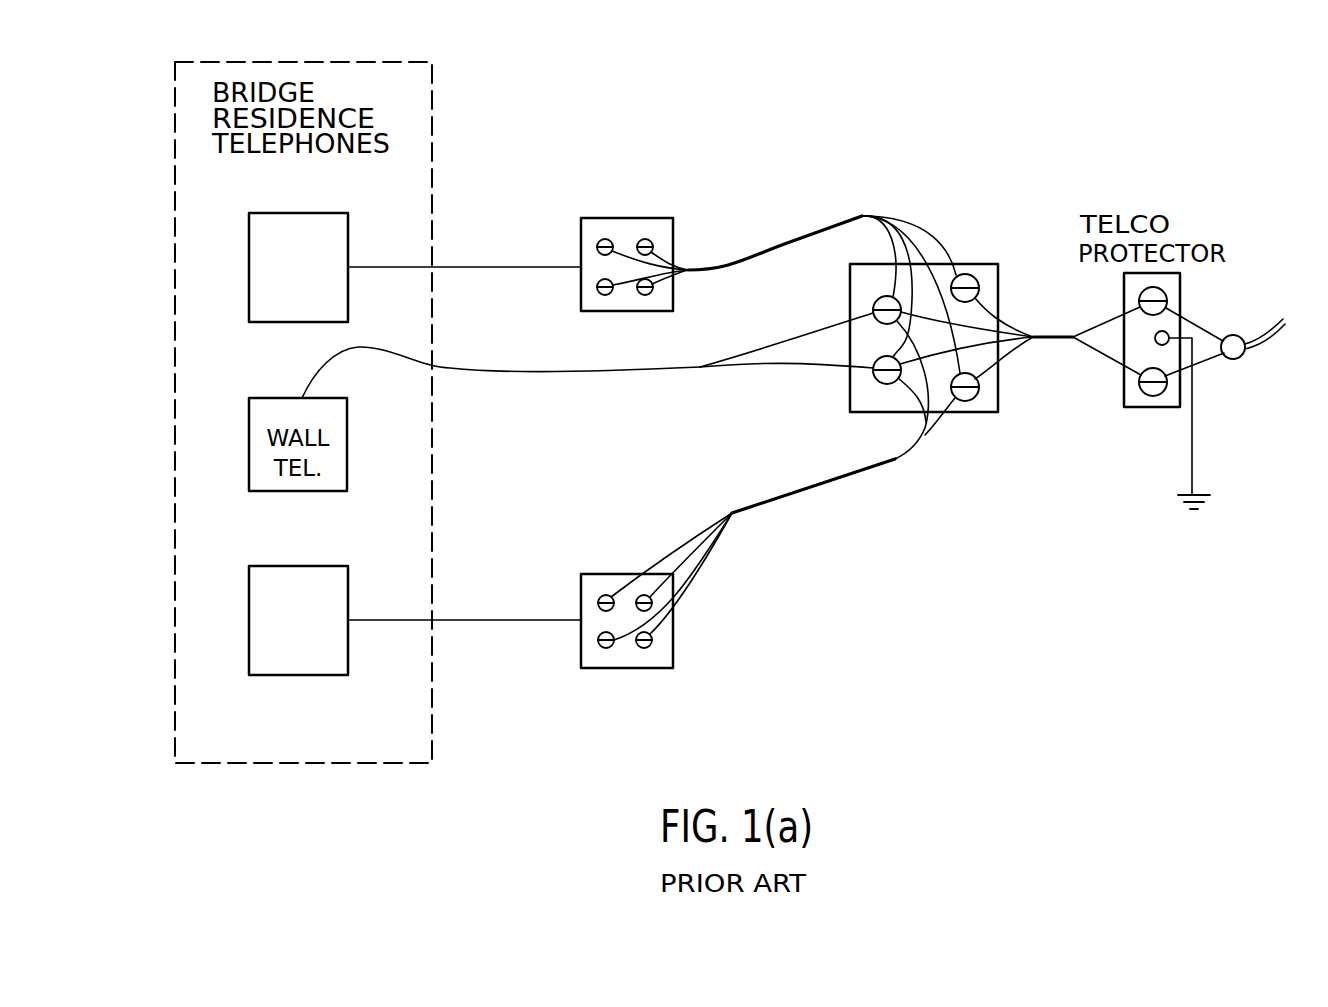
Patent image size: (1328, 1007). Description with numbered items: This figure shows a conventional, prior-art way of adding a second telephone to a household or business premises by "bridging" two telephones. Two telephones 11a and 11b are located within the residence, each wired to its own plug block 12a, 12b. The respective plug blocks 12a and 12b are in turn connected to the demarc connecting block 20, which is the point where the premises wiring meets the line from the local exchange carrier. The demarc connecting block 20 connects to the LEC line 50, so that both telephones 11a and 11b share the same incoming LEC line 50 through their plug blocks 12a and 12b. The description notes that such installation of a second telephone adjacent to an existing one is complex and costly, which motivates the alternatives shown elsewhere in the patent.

The telephone 11a is at (249, 267).
The telephone 11b is at (249, 619).
The plug block 12a is at (628, 218).
The plug block 12b is at (673, 637).
The demarc connecting block 20 is at (975, 266).
The LEC line 50 is at (1278, 328).